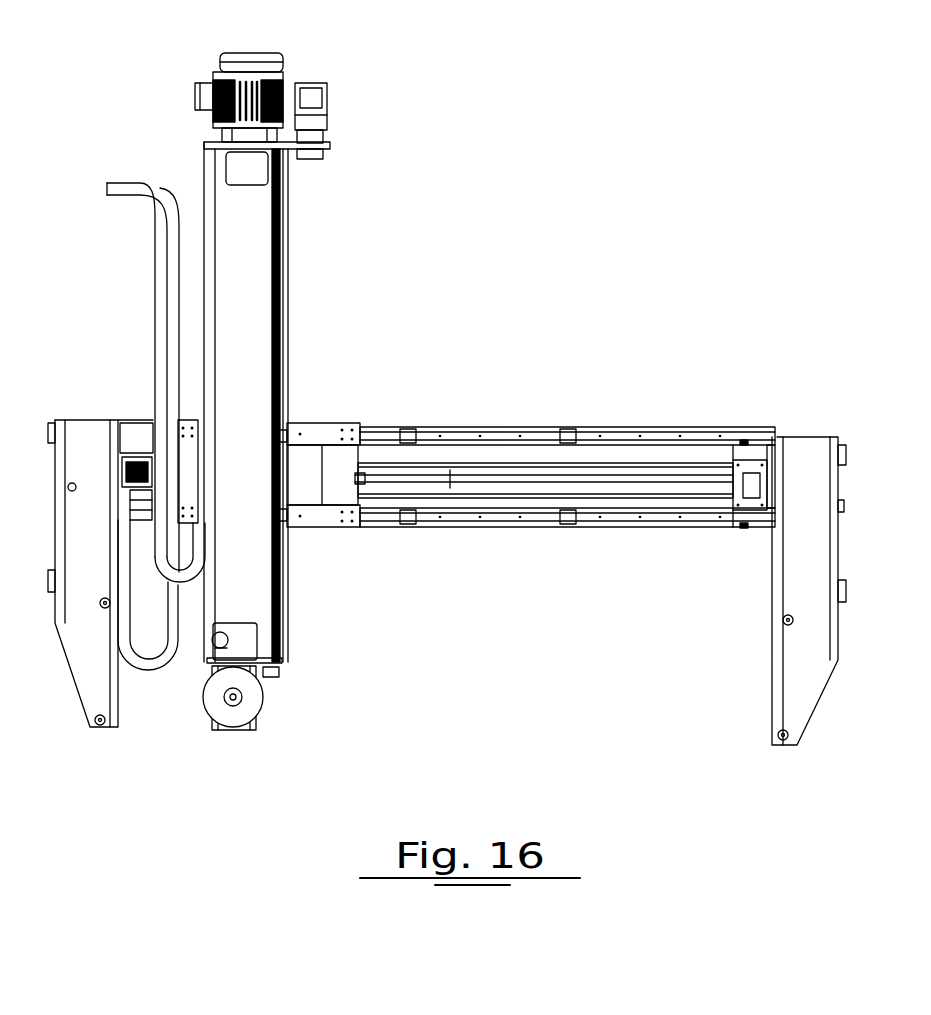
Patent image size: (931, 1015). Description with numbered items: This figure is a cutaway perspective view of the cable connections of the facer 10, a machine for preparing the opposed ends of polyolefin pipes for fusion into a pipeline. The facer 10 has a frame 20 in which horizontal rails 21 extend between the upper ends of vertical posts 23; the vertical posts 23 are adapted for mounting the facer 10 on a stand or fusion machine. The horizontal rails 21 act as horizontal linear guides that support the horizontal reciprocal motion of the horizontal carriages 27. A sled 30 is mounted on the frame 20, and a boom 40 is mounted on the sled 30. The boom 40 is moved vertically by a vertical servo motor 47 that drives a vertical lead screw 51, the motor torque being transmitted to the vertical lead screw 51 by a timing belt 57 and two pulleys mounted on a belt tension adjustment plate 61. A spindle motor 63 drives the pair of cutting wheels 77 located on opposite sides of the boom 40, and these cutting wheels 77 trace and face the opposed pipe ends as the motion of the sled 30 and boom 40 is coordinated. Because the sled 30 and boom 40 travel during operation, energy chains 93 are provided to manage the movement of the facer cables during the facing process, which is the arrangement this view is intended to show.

The facer 10 is at (472, 208).
The frame 20 is at (582, 628).
The horizontal rails 21 is at (473, 435).
The vertical posts 23 is at (93, 690).
The horizontal carriages 27 is at (350, 424).
The sled 30 is at (308, 455).
The boom 40 is at (265, 272).
The vertical servo motor 47 is at (328, 102).
The vertical lead screw 51 is at (287, 618).
The timing belt 57 is at (311, 160).
The belt tension adjustment plate 61 is at (332, 145).
The spindle motor 63 is at (238, 58).
The cutting wheels 77 is at (248, 708).
The energy chains 93 is at (170, 310).